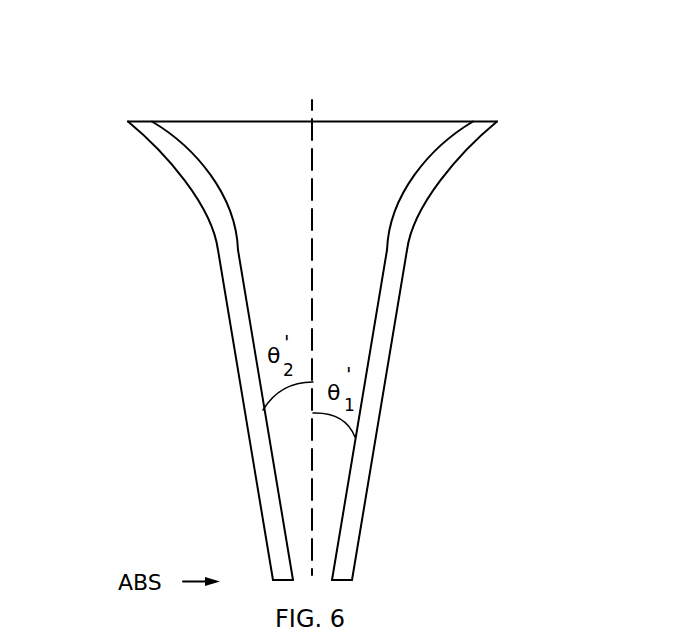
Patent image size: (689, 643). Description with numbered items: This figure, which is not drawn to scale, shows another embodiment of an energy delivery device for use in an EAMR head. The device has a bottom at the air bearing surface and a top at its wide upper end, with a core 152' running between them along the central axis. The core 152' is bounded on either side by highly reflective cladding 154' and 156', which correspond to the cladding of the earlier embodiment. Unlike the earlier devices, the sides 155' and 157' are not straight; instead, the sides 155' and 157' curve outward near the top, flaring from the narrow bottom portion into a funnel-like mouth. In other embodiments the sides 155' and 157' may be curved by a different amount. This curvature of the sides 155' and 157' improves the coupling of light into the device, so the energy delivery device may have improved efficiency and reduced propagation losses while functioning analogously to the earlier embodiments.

The core 152' is at (190, 163).
The highly reflective cladding 154' is at (402, 351).
The side 155' is at (431, 351).
The highly reflective cladding 156' is at (200, 351).
The side 157' is at (207, 351).